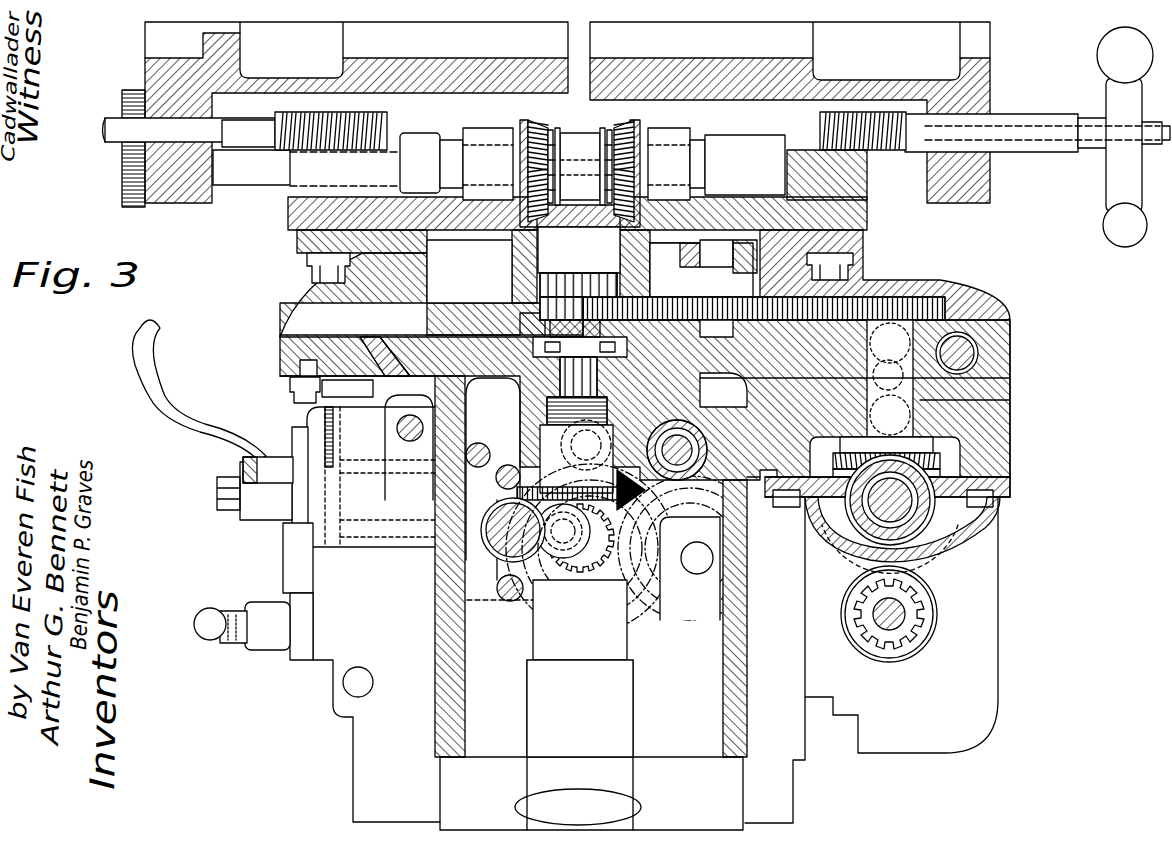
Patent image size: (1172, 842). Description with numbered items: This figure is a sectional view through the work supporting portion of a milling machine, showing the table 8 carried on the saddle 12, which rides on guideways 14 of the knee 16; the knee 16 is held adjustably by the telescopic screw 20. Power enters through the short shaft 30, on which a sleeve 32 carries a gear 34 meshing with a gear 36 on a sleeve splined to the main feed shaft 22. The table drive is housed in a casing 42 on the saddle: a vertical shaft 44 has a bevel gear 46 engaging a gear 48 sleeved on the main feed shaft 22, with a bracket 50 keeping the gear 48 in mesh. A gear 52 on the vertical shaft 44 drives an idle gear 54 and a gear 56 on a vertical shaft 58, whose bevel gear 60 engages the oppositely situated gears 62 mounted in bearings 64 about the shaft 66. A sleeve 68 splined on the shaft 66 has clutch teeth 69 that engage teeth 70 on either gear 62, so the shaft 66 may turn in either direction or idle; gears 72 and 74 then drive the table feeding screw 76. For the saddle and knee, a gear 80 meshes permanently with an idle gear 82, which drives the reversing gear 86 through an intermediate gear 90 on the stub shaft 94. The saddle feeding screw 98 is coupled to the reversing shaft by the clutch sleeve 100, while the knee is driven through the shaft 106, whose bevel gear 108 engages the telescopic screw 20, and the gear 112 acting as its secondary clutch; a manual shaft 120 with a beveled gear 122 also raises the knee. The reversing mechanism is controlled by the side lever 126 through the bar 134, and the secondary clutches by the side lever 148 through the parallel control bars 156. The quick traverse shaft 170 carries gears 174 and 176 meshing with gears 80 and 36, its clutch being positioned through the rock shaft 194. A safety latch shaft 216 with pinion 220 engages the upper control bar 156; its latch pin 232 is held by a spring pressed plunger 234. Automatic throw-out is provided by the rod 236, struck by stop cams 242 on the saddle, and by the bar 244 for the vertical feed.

The table 8 is at (992, 67).
The saddle 12 is at (320, 300).
The guideways 14 is at (292, 335).
The knee 16 is at (591, 745).
The telescopic screw 20 is at (540, 395).
The main feed shaft 22 is at (905, 522).
The short shaft 30 is at (897, 618).
The sleeve 32 is at (905, 650).
The gear 34 is at (922, 612).
The gear 36 is at (917, 596).
The casing 42 is at (1010, 381).
The vertical shaft 44 is at (1010, 400).
The bevel gear 46 is at (935, 460).
The gear 48 is at (930, 478).
The bracket 50 is at (1010, 488).
The gear 52 is at (945, 292).
The idle gear 54 is at (764, 288).
The gear 56 is at (548, 291).
The vertical shaft 58 is at (540, 268).
The bevel gear 60 is at (585, 228).
The gears 62 is at (530, 130).
The bearings 64 is at (478, 140).
The shaft 66 is at (270, 180).
The sleeve 68 is at (590, 137).
The clutch teeth 69 is at (560, 132).
The teeth 70 is at (552, 142).
The gear 72 is at (131, 208).
The gear 74 is at (122, 100).
The table feeding screw 76 is at (383, 134).
The gear 80 is at (975, 540).
The idle gear 82 is at (767, 529).
The gear 86 is at (662, 596).
The intermediate gear 90 is at (690, 616).
The stub shaft 94 is at (700, 576).
The feeding screw 98 is at (690, 568).
The sleeve 100 is at (760, 520).
The shaft 106 is at (585, 640).
The bevel gear 108 is at (605, 620).
The gear 112 is at (500, 630).
The shaft 120 is at (513, 545).
The beveled gear 122 is at (580, 572).
The lever 126 is at (141, 393).
The bar 134 is at (546, 412).
The lever 148 is at (212, 618).
The control bars 156 is at (508, 465).
The shaft 170 is at (892, 320).
The gear 174 is at (1005, 322).
The gear 176 is at (1010, 368).
The rock shaft 194 is at (978, 352).
The shaft 216 is at (362, 522).
The pinion 220 is at (440, 525).
The latch pin 232 is at (300, 445).
The spring pressed plunger 234 is at (306, 416).
The rod 236 is at (325, 478).
The stop cams 242 is at (296, 386).
The bar 244 is at (350, 686).